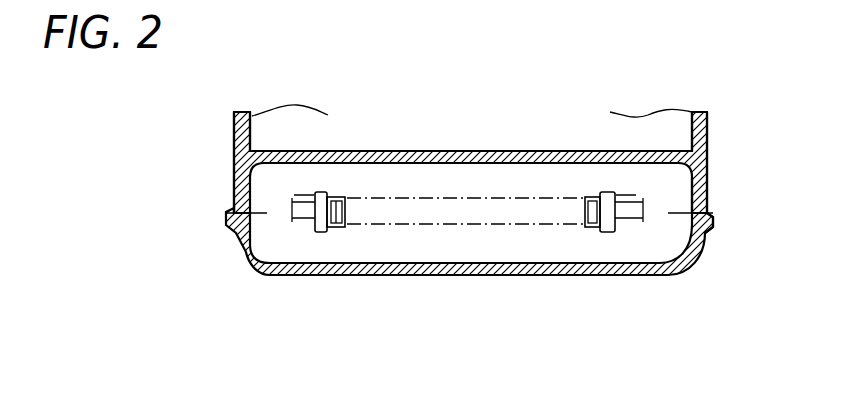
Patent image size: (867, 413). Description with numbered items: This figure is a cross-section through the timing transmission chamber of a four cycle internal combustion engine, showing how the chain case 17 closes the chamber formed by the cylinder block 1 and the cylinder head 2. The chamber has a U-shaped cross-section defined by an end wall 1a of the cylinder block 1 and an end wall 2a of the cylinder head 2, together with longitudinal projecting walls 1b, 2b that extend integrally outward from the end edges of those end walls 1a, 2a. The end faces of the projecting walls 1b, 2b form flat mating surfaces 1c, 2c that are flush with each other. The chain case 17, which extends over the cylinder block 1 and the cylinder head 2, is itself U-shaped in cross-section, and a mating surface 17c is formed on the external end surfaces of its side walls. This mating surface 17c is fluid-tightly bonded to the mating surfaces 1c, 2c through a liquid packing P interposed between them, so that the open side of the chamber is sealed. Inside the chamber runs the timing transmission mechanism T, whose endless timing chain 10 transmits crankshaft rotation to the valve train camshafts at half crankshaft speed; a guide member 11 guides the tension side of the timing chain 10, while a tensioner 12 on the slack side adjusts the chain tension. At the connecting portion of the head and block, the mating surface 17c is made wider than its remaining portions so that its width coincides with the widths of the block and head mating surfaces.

The cylinder block 1 is at (509, 130).
The cylinder head 2 is at (714, 128).
The end wall of the cylinder block 1a is at (471, 137).
The end wall of the cylinder head 2a is at (378, 172).
The projecting wall of the cylinder block 1b is at (460, 162).
The projecting wall of the cylinder head 2b is at (234, 182).
The mating surface of the cylinder block 1c is at (619, 170).
The mating surface of the cylinder head 2c is at (690, 222).
The chain case 17 is at (461, 276).
The mating surface of the chain case 17c is at (714, 205).
The liquid packing P is at (704, 234).
The timing transmission mechanism T is at (545, 236).
The tensioner 12 is at (318, 232).
The timing chain 10 is at (347, 218).
The guide member 11 is at (617, 228).